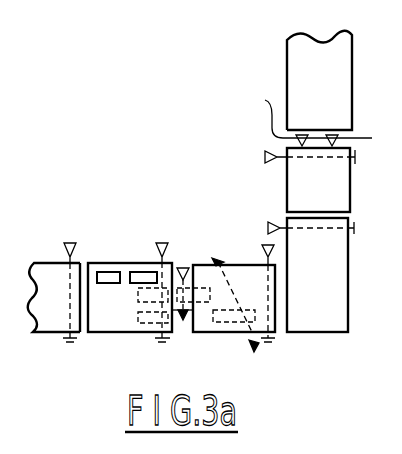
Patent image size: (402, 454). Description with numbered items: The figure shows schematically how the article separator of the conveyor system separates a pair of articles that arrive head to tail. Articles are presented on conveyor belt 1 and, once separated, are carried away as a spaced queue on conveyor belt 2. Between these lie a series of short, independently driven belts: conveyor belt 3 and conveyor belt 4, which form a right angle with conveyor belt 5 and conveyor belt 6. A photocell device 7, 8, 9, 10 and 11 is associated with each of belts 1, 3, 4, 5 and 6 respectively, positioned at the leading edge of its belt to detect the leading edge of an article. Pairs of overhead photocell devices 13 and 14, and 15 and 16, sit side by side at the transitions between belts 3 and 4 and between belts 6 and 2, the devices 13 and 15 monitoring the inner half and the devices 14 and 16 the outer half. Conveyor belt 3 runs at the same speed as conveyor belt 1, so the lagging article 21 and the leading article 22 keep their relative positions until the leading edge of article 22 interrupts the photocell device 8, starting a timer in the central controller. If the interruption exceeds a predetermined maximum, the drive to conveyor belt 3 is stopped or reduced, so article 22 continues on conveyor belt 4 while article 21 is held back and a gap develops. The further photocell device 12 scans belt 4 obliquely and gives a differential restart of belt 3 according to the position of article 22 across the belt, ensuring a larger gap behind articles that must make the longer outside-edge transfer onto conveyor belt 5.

The conveyor belt 1 is at (41, 277).
The conveyor belt 2 is at (335, 72).
The conveyor belt 3 is at (105, 312).
The conveyor belt 4 is at (208, 335).
The conveyor belt 5 is at (317, 308).
The conveyor belt 6 is at (322, 190).
The photocell device 7 is at (70, 240).
The photocell device 8 is at (162, 240).
The photocell device 9 is at (264, 243).
The photocell device 10 is at (265, 228).
The photocell device 11 is at (263, 157).
The photocell device 12 is at (256, 348).
The overhead photocell device 13 is at (183, 265).
The overhead photocell device 14 is at (183, 322).
The overhead photocell device 15 is at (264, 110).
The overhead photocell device 16 is at (338, 140).
The article 21 is at (105, 270).
The article 22 is at (143, 270).